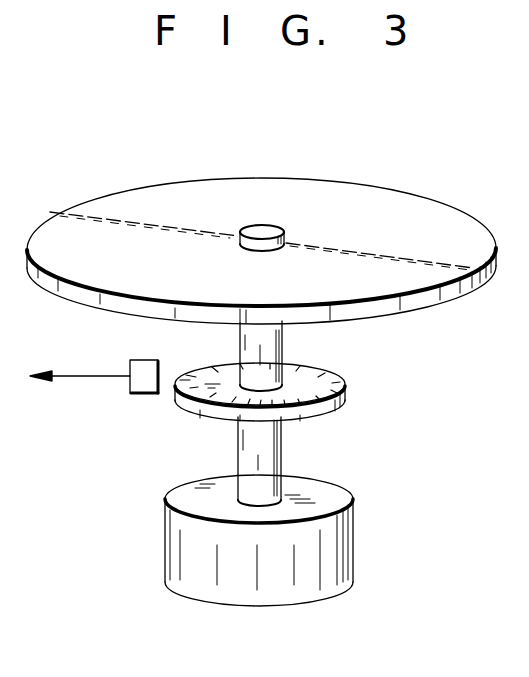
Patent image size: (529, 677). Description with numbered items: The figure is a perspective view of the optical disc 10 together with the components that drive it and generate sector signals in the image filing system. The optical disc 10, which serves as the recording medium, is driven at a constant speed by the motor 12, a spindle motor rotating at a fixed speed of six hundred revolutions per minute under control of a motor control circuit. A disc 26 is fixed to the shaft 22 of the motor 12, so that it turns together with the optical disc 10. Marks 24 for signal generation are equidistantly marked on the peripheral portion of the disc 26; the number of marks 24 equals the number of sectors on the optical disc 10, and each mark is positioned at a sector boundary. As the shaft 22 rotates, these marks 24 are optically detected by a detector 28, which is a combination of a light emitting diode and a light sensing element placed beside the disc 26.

The optical disc 10 is at (453, 222).
The motor 12 is at (354, 515).
The shaft 22 is at (282, 451).
The marks 24 is at (343, 379).
The disc 26 is at (325, 378).
The detector 28 is at (138, 393).